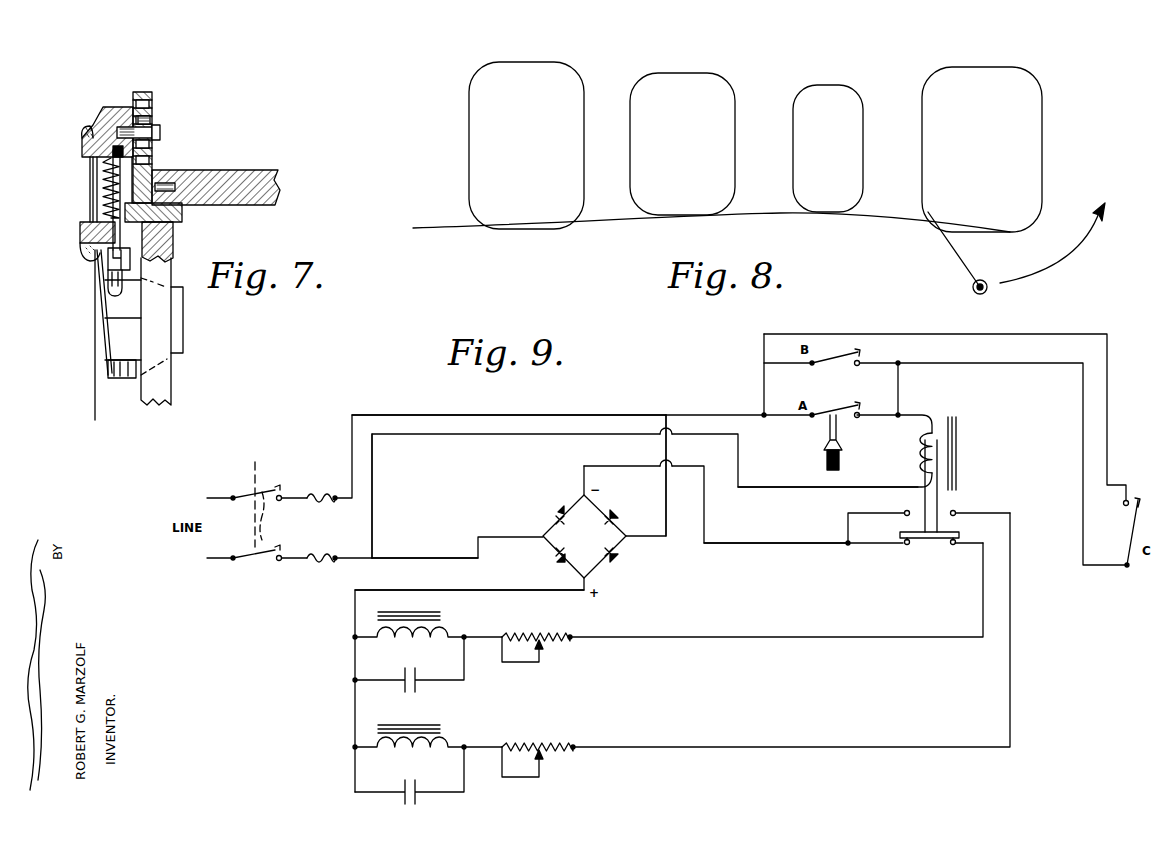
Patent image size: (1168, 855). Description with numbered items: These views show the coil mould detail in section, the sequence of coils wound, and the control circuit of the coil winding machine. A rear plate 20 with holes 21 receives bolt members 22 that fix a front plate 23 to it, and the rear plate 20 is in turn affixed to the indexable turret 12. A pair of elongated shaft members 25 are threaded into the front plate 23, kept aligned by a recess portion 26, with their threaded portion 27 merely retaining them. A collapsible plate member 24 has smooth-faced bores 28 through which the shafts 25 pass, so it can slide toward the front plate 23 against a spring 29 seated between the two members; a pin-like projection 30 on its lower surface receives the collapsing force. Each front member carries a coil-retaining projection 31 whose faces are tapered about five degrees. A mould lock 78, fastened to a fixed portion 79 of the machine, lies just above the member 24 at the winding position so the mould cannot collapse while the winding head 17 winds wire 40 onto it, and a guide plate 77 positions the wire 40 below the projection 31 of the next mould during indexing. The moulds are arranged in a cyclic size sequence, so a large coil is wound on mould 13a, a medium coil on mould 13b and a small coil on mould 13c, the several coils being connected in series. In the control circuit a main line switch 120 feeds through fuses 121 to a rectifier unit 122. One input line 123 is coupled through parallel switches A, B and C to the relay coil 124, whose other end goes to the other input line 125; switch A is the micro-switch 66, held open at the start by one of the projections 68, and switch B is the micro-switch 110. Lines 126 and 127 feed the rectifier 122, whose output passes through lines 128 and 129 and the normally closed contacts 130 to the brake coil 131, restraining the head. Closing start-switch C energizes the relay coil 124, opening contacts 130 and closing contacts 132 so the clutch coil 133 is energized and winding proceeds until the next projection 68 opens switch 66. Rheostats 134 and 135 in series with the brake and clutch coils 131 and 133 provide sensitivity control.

In FIG. 7, the front plate 23 is at (115, 107).
In FIG. 7, the coil-retaining projection 31 is at (80, 130).
In FIG. 7, the rear plate 20 is at (144, 92).
In FIG. 7, the holes 21 is at (152, 118).
In FIG. 7, the bolt members 22 is at (160, 133).
In FIG. 7, the threaded portion 27 is at (113, 152).
In FIG. 7, the recess portion 26 is at (90, 165).
In FIG. 7, the spring 29 is at (103, 187).
In FIG. 7, the turret 12 is at (279, 186).
In FIG. 7, the mould lock 78 is at (182, 212).
In FIG. 7, the fixed portion 79 is at (170, 240).
In FIG. 7, the shaft members 25 is at (80, 232).
In FIG. 7, the plate member 24 is at (84, 250).
In FIG. 7, the smooth-faced bores 28 is at (108, 265).
In FIG. 7, the pin-like projection 30 is at (114, 296).
In FIG. 7, the guide plate 77 is at (104, 336).
In FIG. 7, the wire 40 is at (94, 375).
In FIG. 8, the large coil mould 13a is at (558, 50).
In FIG. 8, the medium coil mould 13b is at (694, 90).
In FIG. 8, the small coil mould 13c is at (828, 96).
In FIG. 8, the winding head 17 is at (971, 292).
In FIG. 9, the main line switch 120 is at (262, 490).
In FIG. 9, the fuses 121 is at (336, 552).
In FIG. 9, the rectifier unit 122 is at (554, 524).
In FIG. 9, the input line 123 is at (460, 413).
In FIG. 9, the input line 125 is at (376, 498).
In FIG. 9, the line 126 is at (451, 558).
In FIG. 9, the line 127 is at (674, 523).
In FIG. 9, the line 128 is at (504, 598).
In FIG. 9, the line 129 is at (776, 544).
In FIG. 9, the relay contacts 130 is at (947, 547).
In FIG. 9, the brake coil 131 is at (450, 630).
In FIG. 9, the relay contacts 132 is at (899, 514).
In FIG. 9, the clutch coil 133 is at (457, 740).
In FIG. 9, the rheostat 134 is at (558, 632).
In FIG. 9, the rheostat 135 is at (554, 744).
In FIG. 9, the micro-switch 110 is at (832, 364).
In FIG. 9, the micro-switch 66 is at (820, 419).
In FIG. 9, the projections 68 is at (824, 460).
In FIG. 9, the relay coil 124 is at (920, 468).